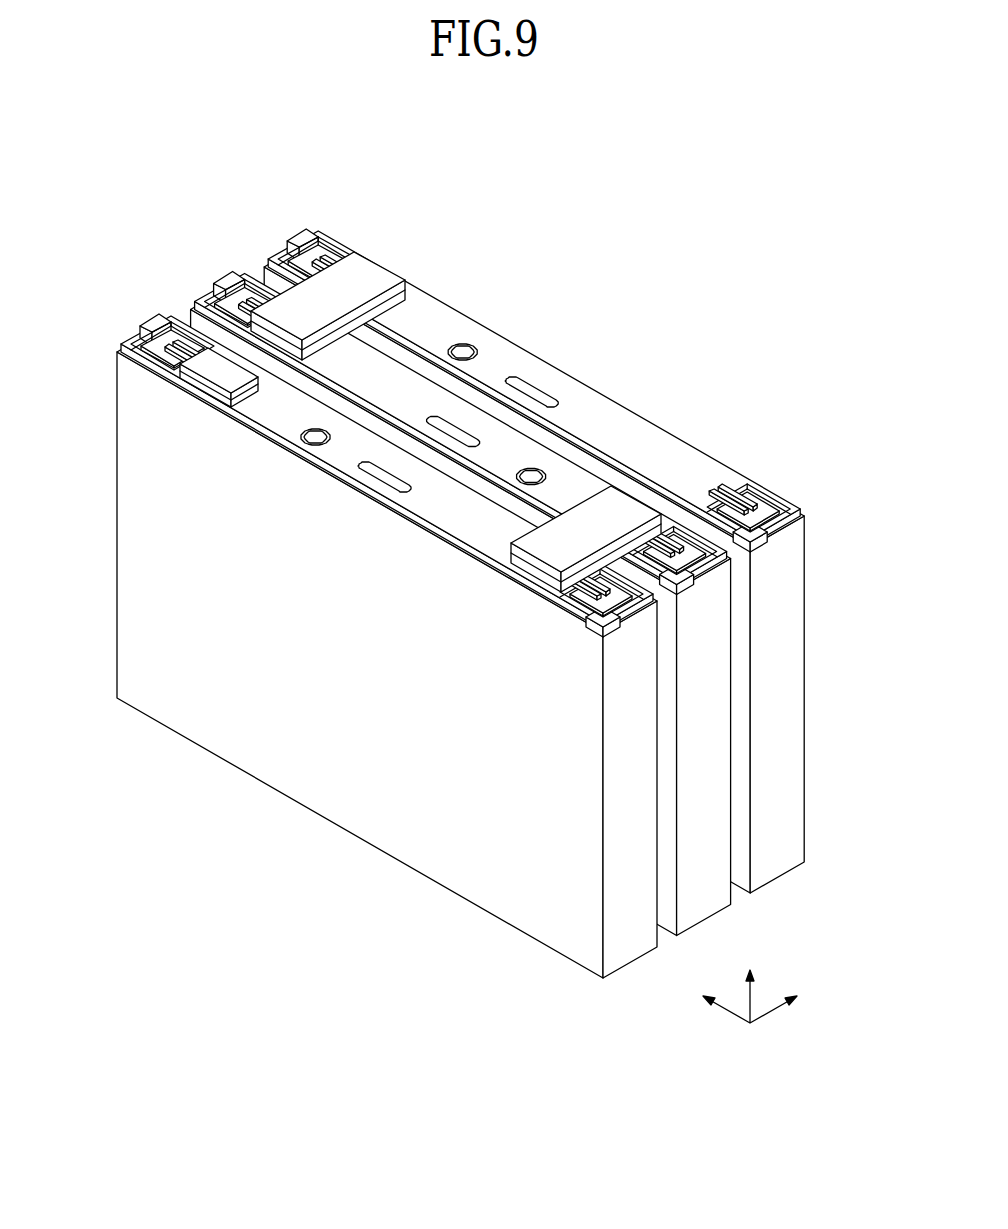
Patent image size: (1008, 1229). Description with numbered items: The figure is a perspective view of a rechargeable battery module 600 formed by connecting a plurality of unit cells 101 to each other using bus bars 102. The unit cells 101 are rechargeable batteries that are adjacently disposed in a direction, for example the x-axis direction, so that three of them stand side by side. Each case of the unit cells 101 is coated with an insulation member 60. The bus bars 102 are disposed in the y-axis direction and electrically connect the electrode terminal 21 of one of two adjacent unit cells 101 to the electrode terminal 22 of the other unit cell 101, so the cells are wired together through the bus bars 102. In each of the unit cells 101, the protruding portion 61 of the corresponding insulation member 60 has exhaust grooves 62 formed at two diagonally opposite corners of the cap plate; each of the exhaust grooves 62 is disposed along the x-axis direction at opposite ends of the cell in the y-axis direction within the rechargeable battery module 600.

The rechargeable battery module 600 is at (454, 205).
The insulation member 60 is at (788, 652).
The protruding portion 61 is at (498, 346).
The exhaust grooves 62 is at (160, 322).
The electrode terminal 21 is at (236, 308).
The electrode terminal 22 is at (166, 348).
The unit cells 101 is at (621, 424).
The bus bars 102 is at (578, 525).